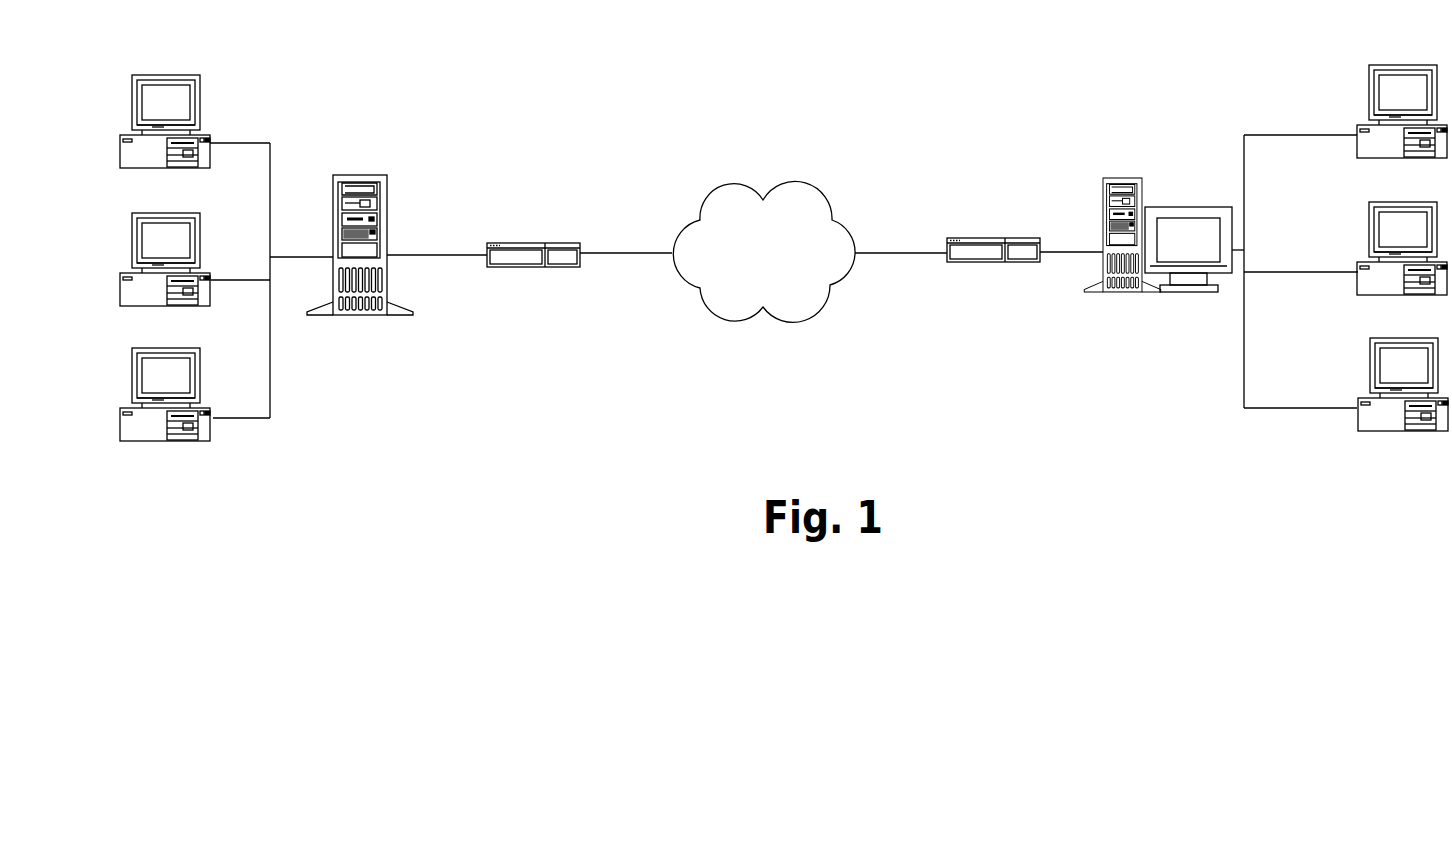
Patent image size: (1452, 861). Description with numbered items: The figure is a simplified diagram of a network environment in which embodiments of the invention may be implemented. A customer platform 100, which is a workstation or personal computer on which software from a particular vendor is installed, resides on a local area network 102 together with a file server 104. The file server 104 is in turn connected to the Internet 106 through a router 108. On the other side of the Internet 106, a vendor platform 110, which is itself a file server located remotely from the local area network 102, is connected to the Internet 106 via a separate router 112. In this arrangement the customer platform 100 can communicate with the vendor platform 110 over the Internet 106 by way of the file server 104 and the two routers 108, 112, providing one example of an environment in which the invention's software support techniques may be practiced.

The customer platform 100 is at (187, 75).
The local area network 102 is at (270, 202).
The file server 104 is at (368, 317).
The Internet 106 is at (733, 183).
The router 108 is at (522, 243).
The vendor platform 110 is at (1123, 178).
The router 112 is at (992, 238).